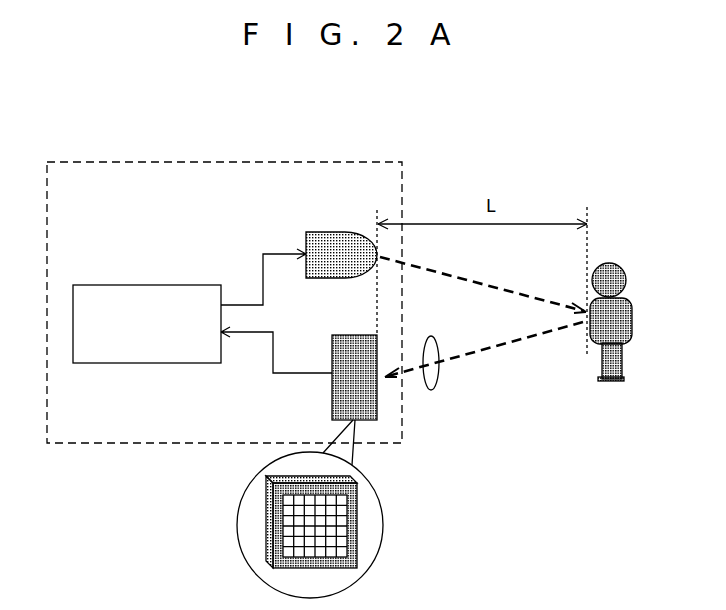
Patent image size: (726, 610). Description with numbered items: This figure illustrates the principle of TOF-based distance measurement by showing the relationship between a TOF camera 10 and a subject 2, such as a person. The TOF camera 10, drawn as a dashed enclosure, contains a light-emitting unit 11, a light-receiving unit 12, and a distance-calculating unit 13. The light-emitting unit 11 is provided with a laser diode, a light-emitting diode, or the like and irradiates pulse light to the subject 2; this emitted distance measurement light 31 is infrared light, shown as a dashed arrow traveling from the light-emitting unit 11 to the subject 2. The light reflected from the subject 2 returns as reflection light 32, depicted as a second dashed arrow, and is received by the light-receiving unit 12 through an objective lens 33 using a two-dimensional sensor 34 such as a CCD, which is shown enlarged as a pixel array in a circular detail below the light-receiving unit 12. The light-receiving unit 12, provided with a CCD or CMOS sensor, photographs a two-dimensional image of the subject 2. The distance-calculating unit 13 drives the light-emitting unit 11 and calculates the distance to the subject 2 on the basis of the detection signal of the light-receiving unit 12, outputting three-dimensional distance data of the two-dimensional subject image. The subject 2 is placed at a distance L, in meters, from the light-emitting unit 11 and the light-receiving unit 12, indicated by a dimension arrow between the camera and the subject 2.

The TOF camera 10 is at (270, 162).
The light-emitting unit 11 is at (326, 231).
The light-receiving unit 12 is at (332, 389).
The distance-calculating unit 13 is at (160, 284).
The subject 2 is at (632, 302).
The distance measurement light 31 is at (483, 284).
The reflection light 32 is at (484, 350).
The objective lens 33 is at (438, 390).
The two-dimensional sensor 34 is at (240, 522).